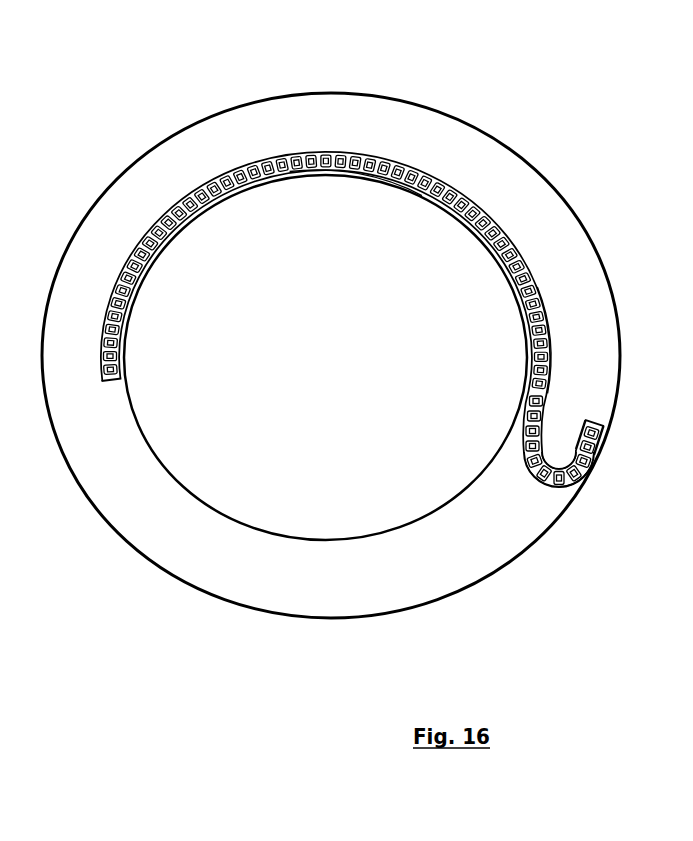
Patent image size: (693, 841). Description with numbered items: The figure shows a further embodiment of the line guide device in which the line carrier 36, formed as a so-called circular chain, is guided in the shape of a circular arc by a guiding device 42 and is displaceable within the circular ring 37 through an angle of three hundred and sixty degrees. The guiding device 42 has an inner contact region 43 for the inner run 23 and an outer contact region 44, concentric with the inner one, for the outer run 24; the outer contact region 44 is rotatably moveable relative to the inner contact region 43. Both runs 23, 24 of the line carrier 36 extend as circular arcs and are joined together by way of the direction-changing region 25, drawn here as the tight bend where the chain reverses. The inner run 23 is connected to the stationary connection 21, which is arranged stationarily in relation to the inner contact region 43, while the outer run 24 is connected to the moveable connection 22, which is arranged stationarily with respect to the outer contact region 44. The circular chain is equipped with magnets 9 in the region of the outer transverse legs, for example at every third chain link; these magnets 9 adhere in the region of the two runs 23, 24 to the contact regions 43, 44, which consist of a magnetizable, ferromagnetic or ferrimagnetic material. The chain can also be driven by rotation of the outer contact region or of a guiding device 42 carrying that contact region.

The magnets 9 is at (297, 170).
The first stationary connection 21 is at (98, 363).
The second moveable connection 22 is at (600, 422).
The first run 23 is at (546, 297).
The second run 24 is at (592, 474).
The direction-changing region 25 is at (530, 483).
The line carrier 36 is at (228, 157).
The circular ring 37 is at (325, 387).
The guiding device 42 is at (502, 120).
The inner contact region 43 is at (420, 198).
The outer contact region 44 is at (575, 492).